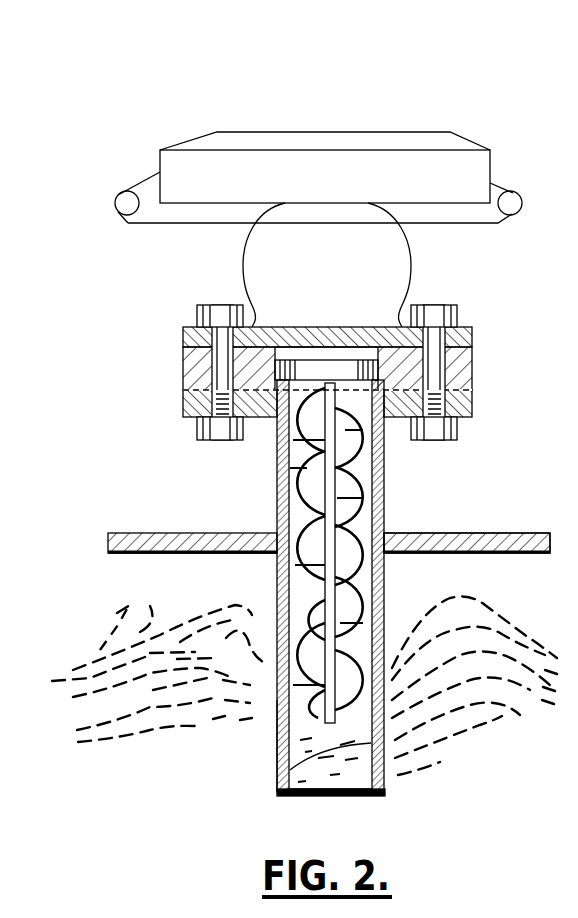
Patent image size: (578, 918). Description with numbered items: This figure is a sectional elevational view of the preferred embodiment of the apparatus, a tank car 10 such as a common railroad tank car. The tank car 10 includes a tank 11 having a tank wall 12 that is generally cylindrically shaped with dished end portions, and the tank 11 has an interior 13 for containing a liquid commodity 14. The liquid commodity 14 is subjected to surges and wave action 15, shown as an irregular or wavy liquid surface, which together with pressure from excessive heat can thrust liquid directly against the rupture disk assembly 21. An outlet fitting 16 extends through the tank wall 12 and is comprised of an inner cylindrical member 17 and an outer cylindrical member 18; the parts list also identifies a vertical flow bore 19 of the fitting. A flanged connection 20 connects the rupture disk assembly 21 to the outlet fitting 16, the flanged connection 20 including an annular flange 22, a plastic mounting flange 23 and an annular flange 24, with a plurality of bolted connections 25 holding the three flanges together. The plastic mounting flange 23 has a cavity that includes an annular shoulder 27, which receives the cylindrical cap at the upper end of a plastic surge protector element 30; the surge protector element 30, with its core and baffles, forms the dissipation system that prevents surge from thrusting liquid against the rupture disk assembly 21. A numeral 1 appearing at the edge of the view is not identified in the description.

The support plate 1 is at (540, 543).
The tank car 10 is at (458, 105).
The tank 11 is at (198, 533).
The tank wall 12 is at (110, 554).
The interior 13 is at (163, 567).
The liquid commodity 14 is at (268, 732).
The wave action 15 is at (485, 627).
The outlet fitting 16 is at (387, 520).
The inner cylindrical member 17 is at (318, 780).
The outer cylindrical member 18 is at (387, 779).
The vertical flow bore 19 is at (307, 470).
The flanged connection 20 is at (321, 387).
The rupture disk assembly 21 is at (344, 271).
The annular flange 22 is at (182, 410).
The plastic mounting flange 23 is at (182, 373).
The annular flange 24 is at (182, 333).
The bolted connection 25 is at (222, 305).
The annular shoulder 27 is at (388, 422).
The plastic surge protector element 30 is at (275, 556).